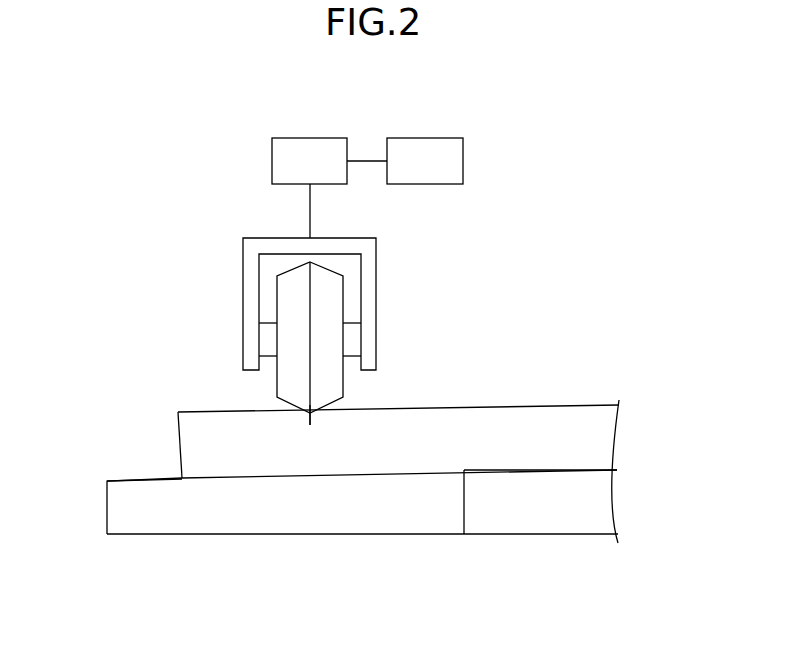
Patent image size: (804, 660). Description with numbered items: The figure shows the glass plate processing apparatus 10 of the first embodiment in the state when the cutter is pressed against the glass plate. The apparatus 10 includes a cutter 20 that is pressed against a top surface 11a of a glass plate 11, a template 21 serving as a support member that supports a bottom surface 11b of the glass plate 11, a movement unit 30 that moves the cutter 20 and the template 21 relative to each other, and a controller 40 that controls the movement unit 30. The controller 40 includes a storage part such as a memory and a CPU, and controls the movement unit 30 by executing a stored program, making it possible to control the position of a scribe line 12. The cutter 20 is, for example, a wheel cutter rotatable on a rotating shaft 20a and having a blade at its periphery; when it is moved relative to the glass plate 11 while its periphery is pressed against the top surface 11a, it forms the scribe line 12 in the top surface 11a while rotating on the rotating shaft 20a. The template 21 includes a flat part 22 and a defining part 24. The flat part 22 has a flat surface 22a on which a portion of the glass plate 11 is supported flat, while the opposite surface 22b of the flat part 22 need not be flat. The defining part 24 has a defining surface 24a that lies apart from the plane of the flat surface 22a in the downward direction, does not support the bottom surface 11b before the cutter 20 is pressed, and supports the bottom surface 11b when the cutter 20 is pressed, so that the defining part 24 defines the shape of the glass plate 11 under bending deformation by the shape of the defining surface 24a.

The glass plate processing apparatus 10 is at (87, 162).
The glass plate 11 is at (435, 415).
The top surface 11a is at (600, 406).
The bottom surface 11b is at (605, 470).
The scribe line 12 is at (307, 421).
The cutter 20 is at (337, 380).
The rotating shaft 20a is at (353, 336).
The template 21 is at (370, 520).
The flat part 22 is at (578, 531).
The flat surface 22a is at (600, 471).
The surface 22b is at (603, 534).
The defining part 24 is at (256, 535).
The defining surface 24a is at (133, 483).
The movement unit 30 is at (309, 153).
The controller 40 is at (424, 153).